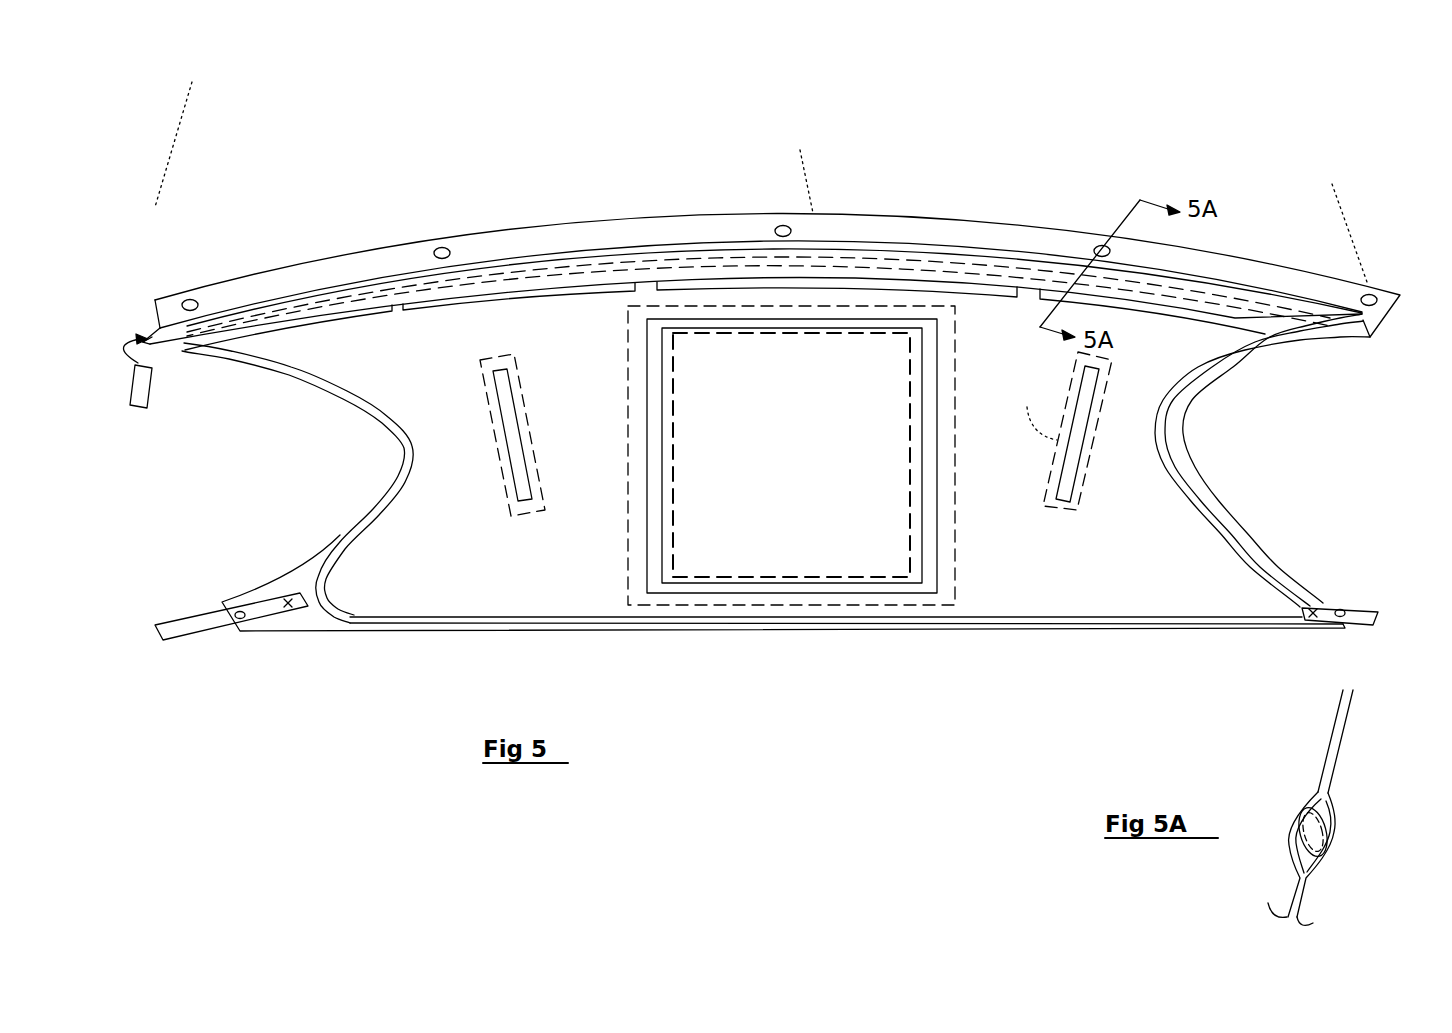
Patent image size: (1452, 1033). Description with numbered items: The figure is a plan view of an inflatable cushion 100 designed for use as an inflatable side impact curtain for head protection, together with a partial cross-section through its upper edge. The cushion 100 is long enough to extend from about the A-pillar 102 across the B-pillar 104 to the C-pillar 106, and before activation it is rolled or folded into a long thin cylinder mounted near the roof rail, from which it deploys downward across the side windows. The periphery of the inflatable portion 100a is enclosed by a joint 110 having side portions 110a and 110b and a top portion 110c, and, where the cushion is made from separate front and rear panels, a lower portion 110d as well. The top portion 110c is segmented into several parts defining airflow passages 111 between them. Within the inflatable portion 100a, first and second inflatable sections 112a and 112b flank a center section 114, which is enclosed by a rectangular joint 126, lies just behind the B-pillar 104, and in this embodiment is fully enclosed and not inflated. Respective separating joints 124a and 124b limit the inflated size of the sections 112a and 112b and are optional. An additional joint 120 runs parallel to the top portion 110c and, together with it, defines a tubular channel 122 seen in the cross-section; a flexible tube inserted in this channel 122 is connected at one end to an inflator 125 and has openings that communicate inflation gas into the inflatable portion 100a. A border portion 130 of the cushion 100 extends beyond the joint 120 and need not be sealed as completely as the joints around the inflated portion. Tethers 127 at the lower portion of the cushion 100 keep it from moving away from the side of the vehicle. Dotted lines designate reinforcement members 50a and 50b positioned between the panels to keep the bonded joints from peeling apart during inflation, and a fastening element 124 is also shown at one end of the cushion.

In FIG. 5, the inflatable cushion 100 is at (1060, 122).
In FIG. 5, the inflatable portion 100a is at (588, 573).
In FIG. 5, the A-pillar 102 is at (1338, 219).
In FIG. 5, the B-pillar 104 is at (800, 184).
In FIG. 5, the C-pillar 106 is at (183, 157).
In FIG. 5, the joint 110 is at (385, 463).
In FIG. 5, the side portion of joint 110a is at (414, 453).
In FIG. 5, the side portion of joint 110b is at (1160, 440).
In FIG. 5, the top portion of joint 110c is at (375, 314).
In FIG. 5A, the top portion of joint 110c is at (1303, 903).
In FIG. 5, the lower portion of joint 110d is at (512, 617).
In FIG. 5, the airflow passages 111 is at (401, 306).
In FIG. 5, the first inflatable section 112a is at (398, 557).
In FIG. 5, the second inflatable section 112b is at (1048, 587).
In FIG. 5, the center section 114 is at (745, 542).
In FIG. 5, the joint 120 is at (830, 250).
In FIG. 5A, the joint 120 is at (1333, 770).
In FIG. 5, the tubular channel 122 is at (600, 263).
In FIG. 5A, the tubular channel 122 is at (1332, 817).
In FIG. 5, the fastener 124 is at (147, 386).
In FIG. 5, the separating joint 124a is at (513, 490).
In FIG. 5, the separating joint 124b is at (1057, 480).
In FIG. 5, the inflator 125 is at (148, 338).
In FIG. 5A, the inflator 125 is at (1327, 855).
In FIG. 5, the rectangular joint 126 is at (653, 453).
In FIG. 5, the tethers 127 is at (188, 632).
In FIG. 5, the border portion 130 is at (377, 257).
In FIG. 5A, the border portion 130 is at (1353, 703).
In FIG. 5, the reinforcement member 50a is at (530, 406).
In FIG. 5, the reinforcement member 50b is at (624, 380).